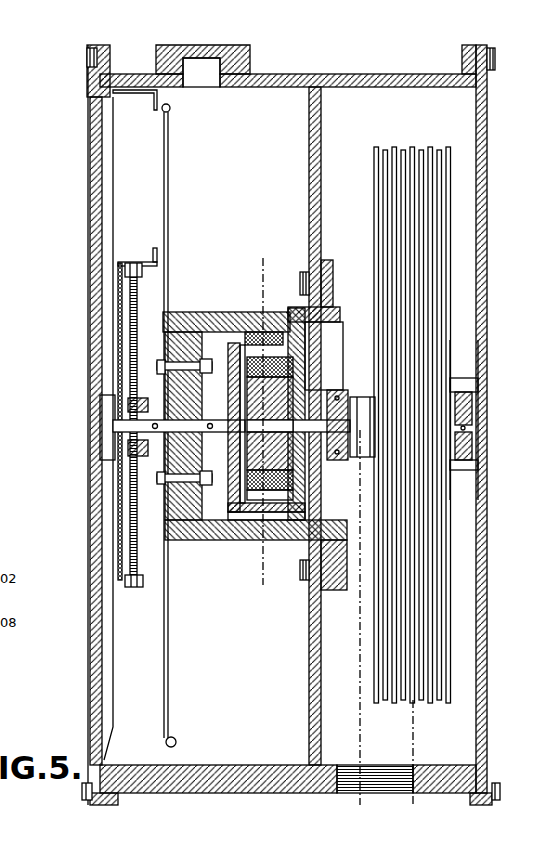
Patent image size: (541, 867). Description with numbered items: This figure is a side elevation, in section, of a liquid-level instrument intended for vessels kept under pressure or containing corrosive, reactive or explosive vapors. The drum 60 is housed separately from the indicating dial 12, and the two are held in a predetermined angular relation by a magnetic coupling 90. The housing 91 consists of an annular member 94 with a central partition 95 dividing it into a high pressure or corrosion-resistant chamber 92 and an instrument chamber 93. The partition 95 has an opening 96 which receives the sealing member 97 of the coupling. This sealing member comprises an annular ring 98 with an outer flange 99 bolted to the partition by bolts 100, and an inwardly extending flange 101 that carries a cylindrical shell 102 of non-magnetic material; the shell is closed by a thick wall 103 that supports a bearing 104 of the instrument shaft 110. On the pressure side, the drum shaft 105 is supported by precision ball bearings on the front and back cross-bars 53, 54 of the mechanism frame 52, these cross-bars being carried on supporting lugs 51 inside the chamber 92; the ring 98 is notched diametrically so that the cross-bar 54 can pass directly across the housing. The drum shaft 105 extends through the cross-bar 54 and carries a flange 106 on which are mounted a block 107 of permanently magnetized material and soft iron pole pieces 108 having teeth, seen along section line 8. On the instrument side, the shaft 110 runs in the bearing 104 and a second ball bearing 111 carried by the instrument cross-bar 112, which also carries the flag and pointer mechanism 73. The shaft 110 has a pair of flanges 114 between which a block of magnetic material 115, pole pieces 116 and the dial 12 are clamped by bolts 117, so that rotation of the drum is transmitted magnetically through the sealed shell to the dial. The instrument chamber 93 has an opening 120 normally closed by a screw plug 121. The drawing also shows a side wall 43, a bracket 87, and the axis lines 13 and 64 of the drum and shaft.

The section line 8 is at (262, 422).
The indicating dial 12 is at (169, 168).
The motor axis 13 is at (414, 725).
The housing side wall 43 is at (487, 282).
The supporting lugs 51 is at (470, 381).
The mechanism frame 52 is at (452, 380).
The front cross-bar 53 is at (465, 464).
The back cross-bar 54 is at (345, 462).
The drum 60 is at (423, 196).
The shaft axis 64 is at (358, 678).
The flag and pointer mechanism 73 is at (126, 323).
The bracket 87 is at (156, 108).
The magnetic coupling 90 is at (246, 525).
The housing 91 is at (282, 100).
The high pressure or corrosion-resistant chamber 92 is at (458, 110).
The instrument chamber 93 is at (128, 150).
The annular member 94 is at (388, 74).
The central partition 95 is at (321, 133).
The opening 96 is at (312, 542).
The sealing member 97 is at (333, 540).
The annular ring 98 is at (321, 322).
The outer flange 99 is at (327, 265).
The bolts 100 is at (304, 272).
The inwardly extending flange 101 is at (296, 307).
The cylindrical shell 102 is at (248, 333).
The thick wall 103 is at (237, 360).
The bearing 104 is at (226, 445).
The drum shaft 105 is at (466, 426).
The flange 106 is at (308, 448).
The block of permanently magnetized material 107 is at (270, 397).
The pole pieces 108 is at (270, 494).
The instrument shaft 110 is at (134, 430).
The ball bearing 111 is at (134, 415).
The instrument cross-bar 112 is at (134, 447).
The flanges 114 is at (200, 340).
The block of magnetic material 115 is at (165, 484).
The pole pieces 116 is at (218, 315).
The bolts 117 is at (157, 366).
The opening 120 is at (229, 72).
The screw plug 121 is at (206, 60).